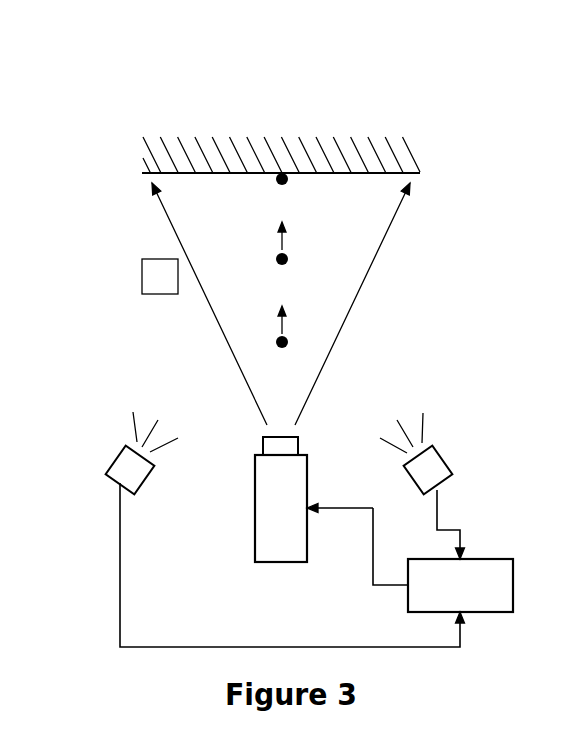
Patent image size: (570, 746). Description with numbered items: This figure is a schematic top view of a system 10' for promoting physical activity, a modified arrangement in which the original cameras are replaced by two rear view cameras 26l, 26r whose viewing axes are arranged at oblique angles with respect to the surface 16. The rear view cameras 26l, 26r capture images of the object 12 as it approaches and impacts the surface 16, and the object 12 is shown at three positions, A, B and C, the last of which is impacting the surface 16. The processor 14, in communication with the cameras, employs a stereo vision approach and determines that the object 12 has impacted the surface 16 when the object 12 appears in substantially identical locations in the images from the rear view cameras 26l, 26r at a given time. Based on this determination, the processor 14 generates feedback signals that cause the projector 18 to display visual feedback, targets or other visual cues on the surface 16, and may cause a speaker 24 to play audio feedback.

The system for promoting physical activity 10' is at (283, 341).
The surface 16 is at (337, 173).
The object 12 is at (278, 258).
The speaker 24 is at (155, 294).
The projector 18 is at (263, 533).
The processor 14 is at (492, 569).
The rear view camera 26l is at (110, 468).
The rear view camera 26r is at (452, 472).